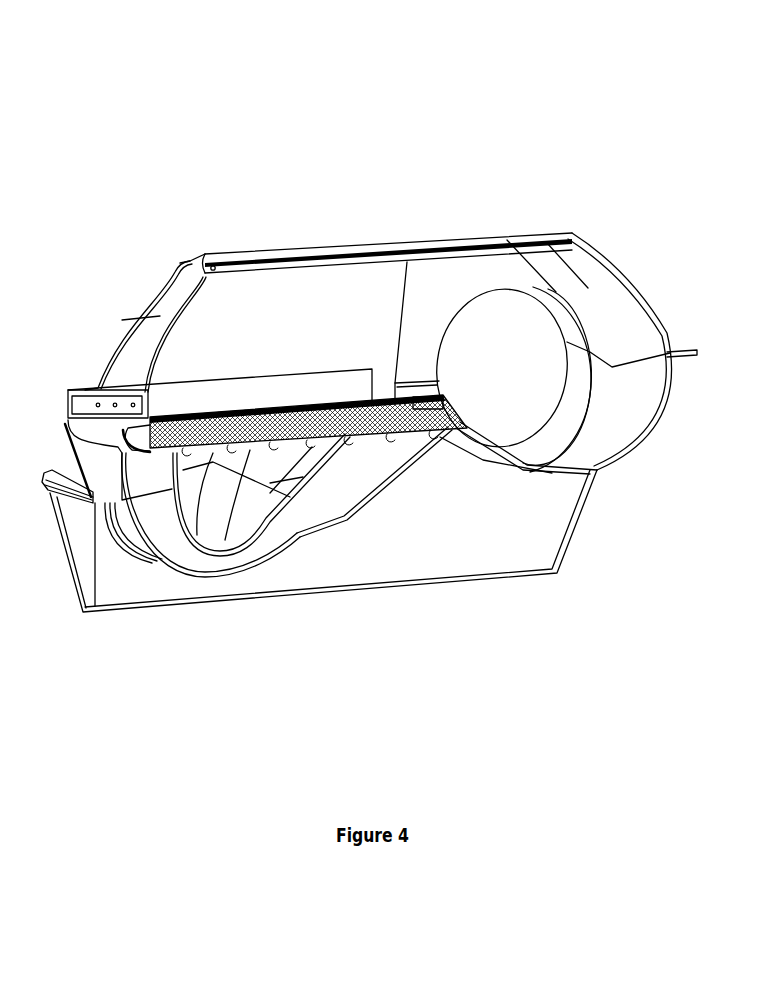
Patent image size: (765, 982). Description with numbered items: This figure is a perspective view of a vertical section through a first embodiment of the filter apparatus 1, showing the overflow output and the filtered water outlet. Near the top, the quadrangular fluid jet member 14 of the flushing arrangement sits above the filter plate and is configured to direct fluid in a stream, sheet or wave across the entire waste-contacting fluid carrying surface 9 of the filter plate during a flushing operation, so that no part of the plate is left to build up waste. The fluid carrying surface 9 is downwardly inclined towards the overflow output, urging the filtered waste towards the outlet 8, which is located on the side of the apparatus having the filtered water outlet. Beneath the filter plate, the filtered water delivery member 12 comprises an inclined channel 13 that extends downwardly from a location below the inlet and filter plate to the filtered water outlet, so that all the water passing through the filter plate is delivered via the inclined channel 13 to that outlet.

The filter apparatus 1 is at (517, 80).
The outlet 8 is at (553, 390).
The fluid carrying surface 9 is at (332, 410).
The filtered water delivery member 12 is at (271, 563).
The inclined channel 13 is at (350, 520).
The quadrangular fluid jet member 14 is at (155, 448).